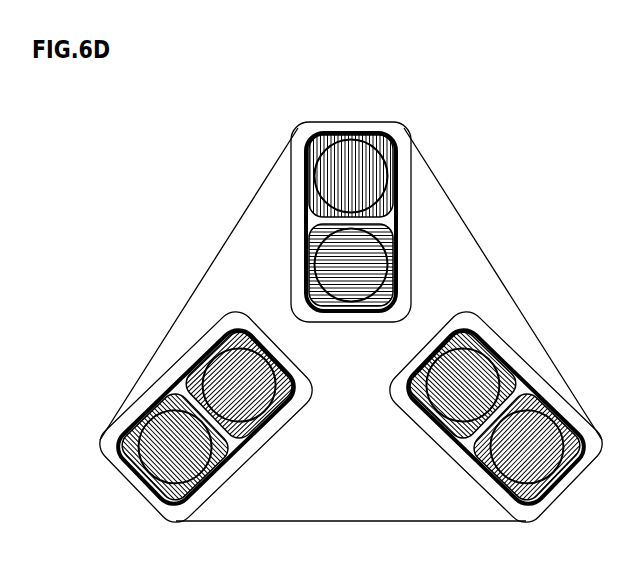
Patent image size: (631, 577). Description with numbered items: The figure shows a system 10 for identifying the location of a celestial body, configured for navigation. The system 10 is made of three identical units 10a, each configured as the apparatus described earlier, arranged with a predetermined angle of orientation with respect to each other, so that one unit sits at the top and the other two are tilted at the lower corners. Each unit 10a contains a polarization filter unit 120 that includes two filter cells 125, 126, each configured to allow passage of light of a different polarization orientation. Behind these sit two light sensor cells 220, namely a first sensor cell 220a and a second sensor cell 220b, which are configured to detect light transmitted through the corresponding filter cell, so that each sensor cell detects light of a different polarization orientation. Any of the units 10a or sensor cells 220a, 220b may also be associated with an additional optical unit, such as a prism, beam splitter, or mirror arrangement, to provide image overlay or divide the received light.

The system 10 is at (188, 303).
The unit 10a is at (308, 122).
The polarization filter unit 120 is at (307, 192).
The filter cell 125 is at (320, 239).
The filter cell 126 is at (321, 151).
The light sensor cells 220 is at (397, 221).
The light sensor cell 220a is at (387, 178).
The light sensor cell 220b is at (387, 267).